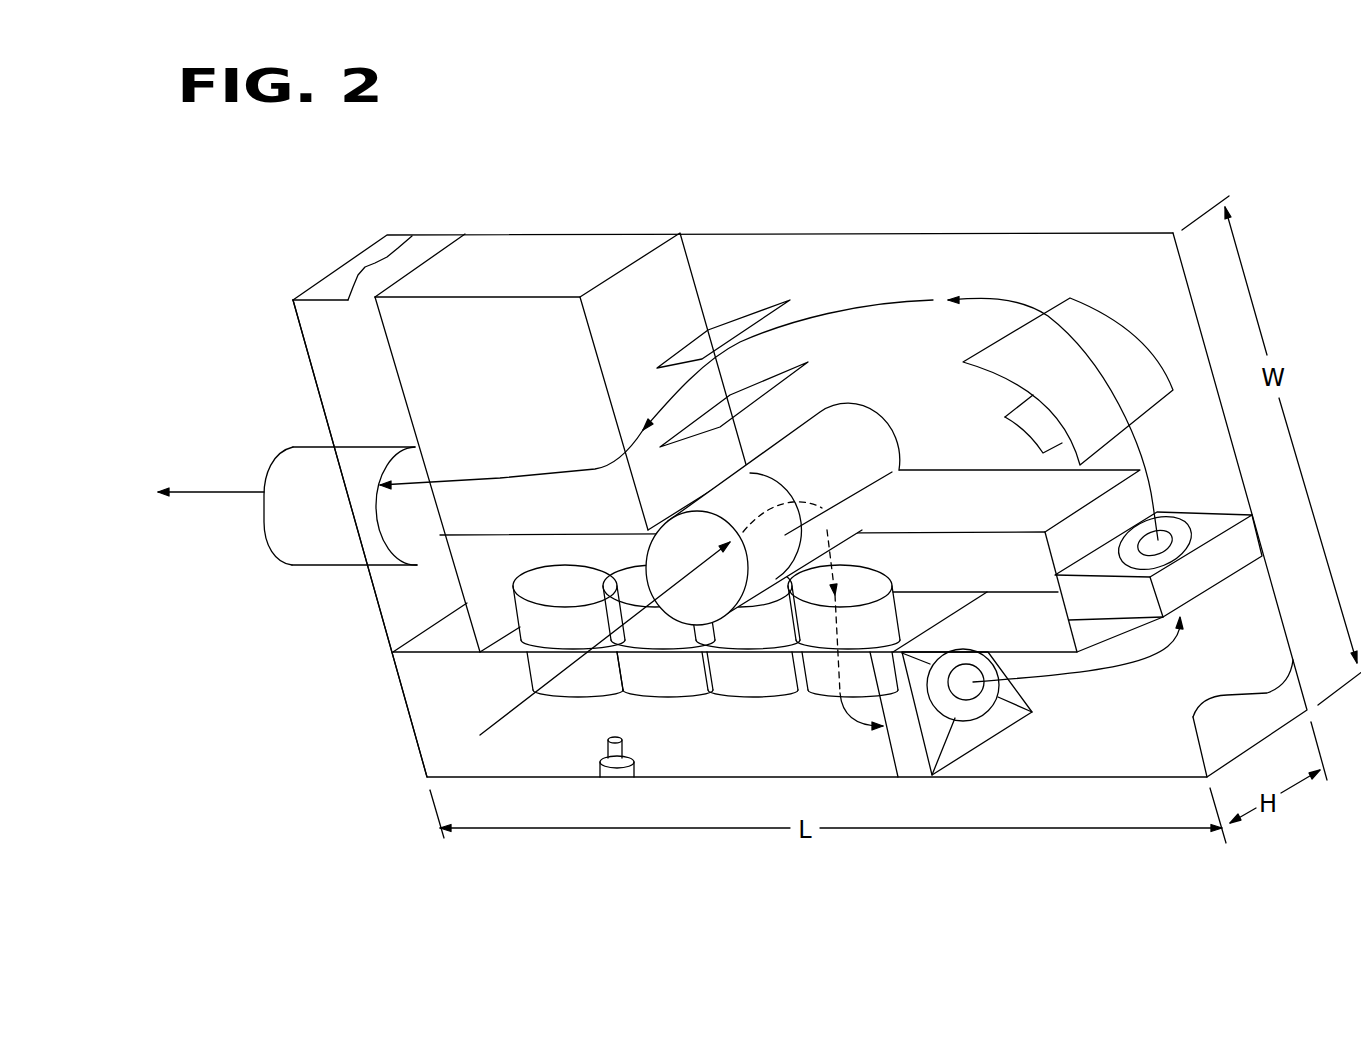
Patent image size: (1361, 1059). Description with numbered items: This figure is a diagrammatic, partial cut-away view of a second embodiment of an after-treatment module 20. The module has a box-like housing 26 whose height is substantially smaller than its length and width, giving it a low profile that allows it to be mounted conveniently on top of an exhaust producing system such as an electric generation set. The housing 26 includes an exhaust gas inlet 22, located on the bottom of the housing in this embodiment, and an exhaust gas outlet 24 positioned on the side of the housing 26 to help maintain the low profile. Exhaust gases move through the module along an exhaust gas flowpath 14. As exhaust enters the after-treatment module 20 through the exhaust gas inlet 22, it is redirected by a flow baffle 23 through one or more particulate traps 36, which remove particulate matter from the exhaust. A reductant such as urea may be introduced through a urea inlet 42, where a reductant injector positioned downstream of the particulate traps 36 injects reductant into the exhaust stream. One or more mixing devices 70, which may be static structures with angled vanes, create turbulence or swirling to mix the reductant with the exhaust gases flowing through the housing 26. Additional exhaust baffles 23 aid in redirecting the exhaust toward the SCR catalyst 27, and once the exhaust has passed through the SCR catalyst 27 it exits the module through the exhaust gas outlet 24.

The exhaust gas flowpath 14 is at (893, 304).
The after-treatment module 20 is at (308, 267).
The exhaust gas inlet 22 is at (668, 558).
The flow baffle 23 is at (752, 310).
The exhaust gas outlet 24 is at (313, 438).
The housing 26 is at (407, 707).
The SCR catalyst 27 is at (521, 395).
The particulate traps 36 is at (728, 697).
The urea inlet 42 is at (634, 767).
The mixing devices 70 is at (1258, 533).